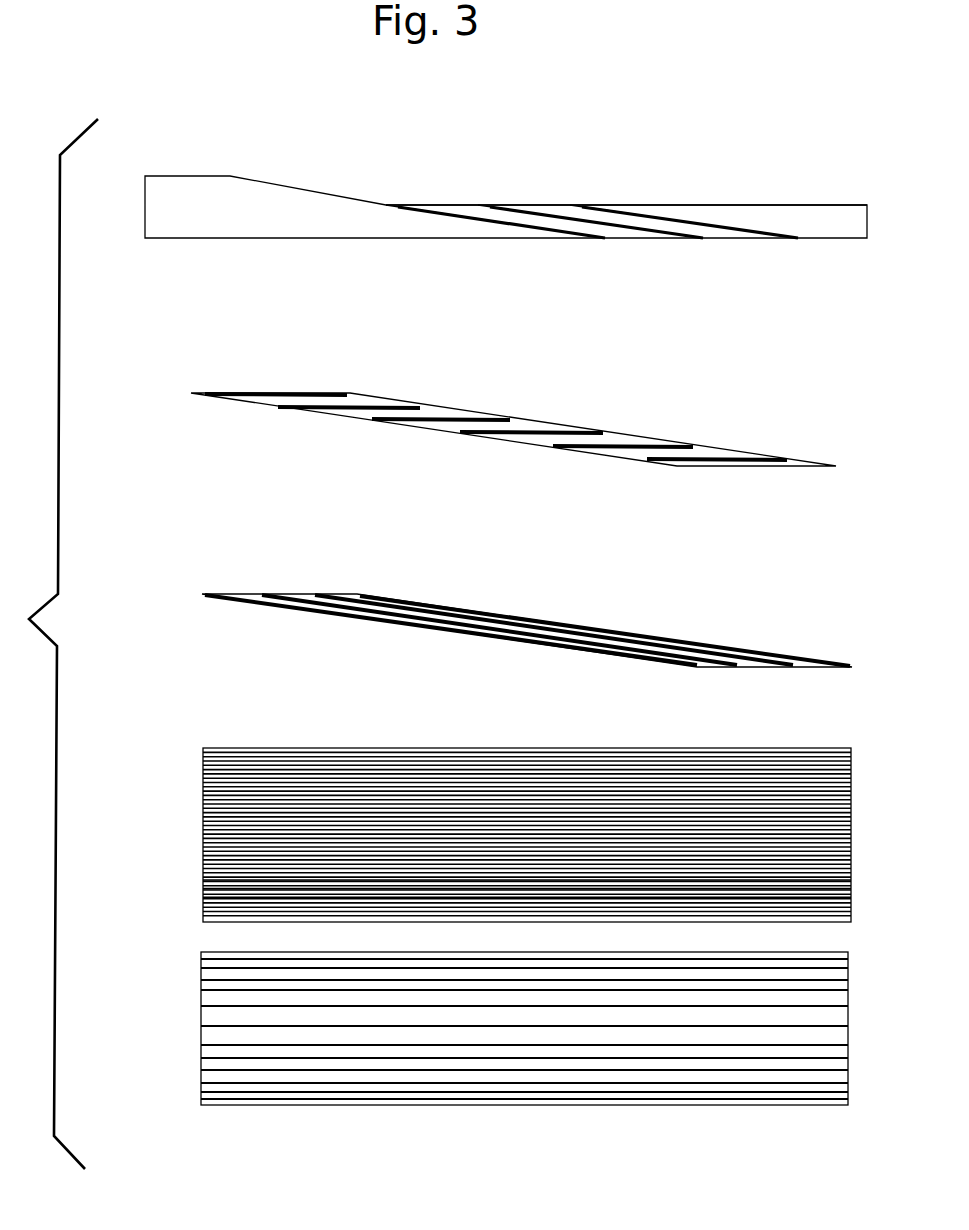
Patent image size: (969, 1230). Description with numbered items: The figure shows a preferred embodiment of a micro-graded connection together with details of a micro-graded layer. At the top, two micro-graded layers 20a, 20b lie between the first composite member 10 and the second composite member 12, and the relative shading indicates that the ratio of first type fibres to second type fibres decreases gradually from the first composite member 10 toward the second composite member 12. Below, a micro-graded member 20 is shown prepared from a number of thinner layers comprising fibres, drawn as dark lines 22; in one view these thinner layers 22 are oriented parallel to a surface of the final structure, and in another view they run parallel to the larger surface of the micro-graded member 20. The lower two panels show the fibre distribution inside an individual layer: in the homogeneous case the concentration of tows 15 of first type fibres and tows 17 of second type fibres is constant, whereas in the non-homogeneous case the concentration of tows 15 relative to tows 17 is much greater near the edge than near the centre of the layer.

The first composite member 10 is at (224, 208).
The second composite member 12 is at (703, 213).
The micro-graded layer 20a is at (428, 205).
The micro-graded layer 20b is at (510, 205).
The micro-graded member 20 is at (521, 500).
The thinner layers comprising fibres 22 is at (718, 455).
The tows of first type fibres 15 is at (225, 782).
The tows of second type fibres 17 is at (230, 890).